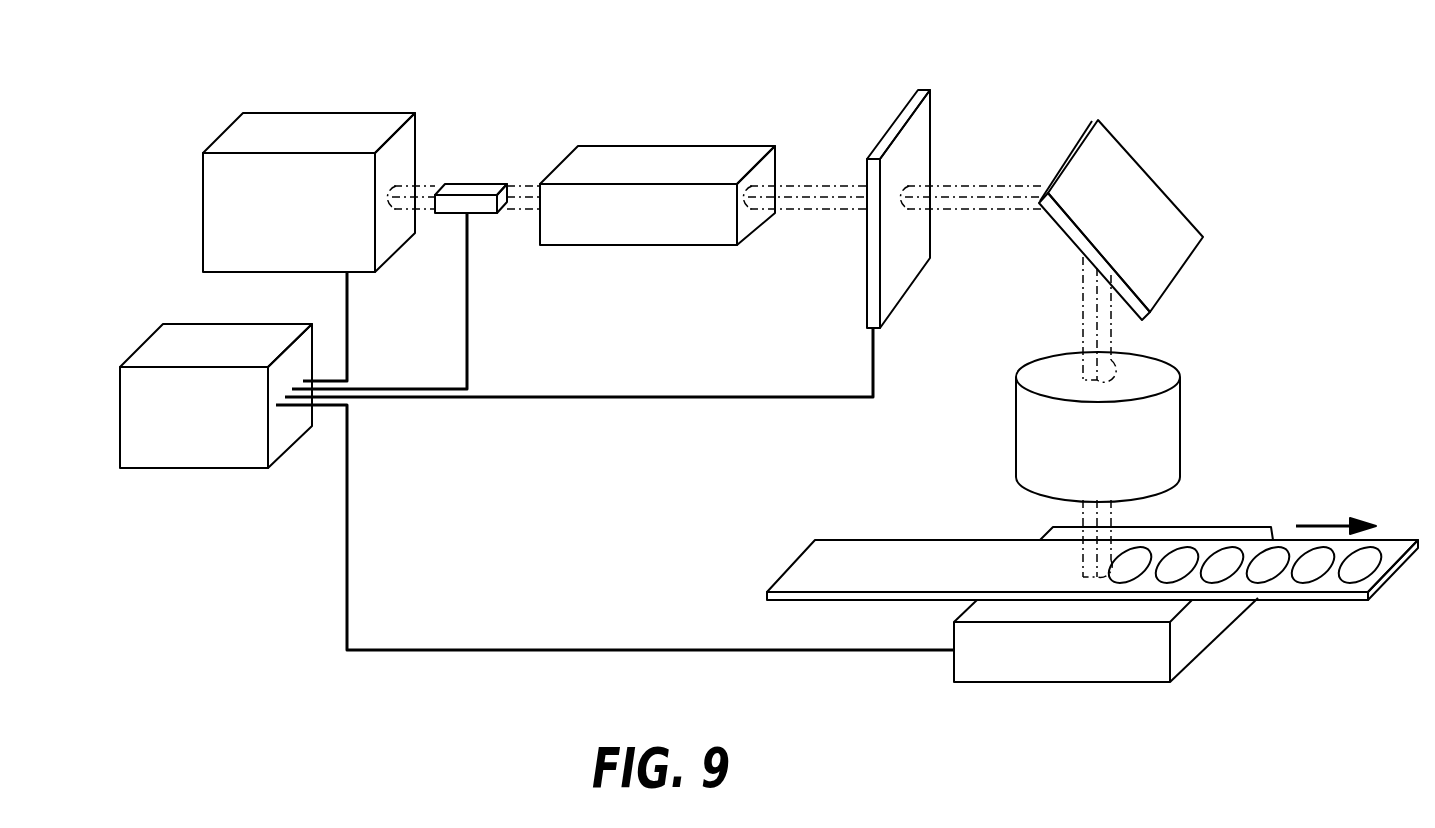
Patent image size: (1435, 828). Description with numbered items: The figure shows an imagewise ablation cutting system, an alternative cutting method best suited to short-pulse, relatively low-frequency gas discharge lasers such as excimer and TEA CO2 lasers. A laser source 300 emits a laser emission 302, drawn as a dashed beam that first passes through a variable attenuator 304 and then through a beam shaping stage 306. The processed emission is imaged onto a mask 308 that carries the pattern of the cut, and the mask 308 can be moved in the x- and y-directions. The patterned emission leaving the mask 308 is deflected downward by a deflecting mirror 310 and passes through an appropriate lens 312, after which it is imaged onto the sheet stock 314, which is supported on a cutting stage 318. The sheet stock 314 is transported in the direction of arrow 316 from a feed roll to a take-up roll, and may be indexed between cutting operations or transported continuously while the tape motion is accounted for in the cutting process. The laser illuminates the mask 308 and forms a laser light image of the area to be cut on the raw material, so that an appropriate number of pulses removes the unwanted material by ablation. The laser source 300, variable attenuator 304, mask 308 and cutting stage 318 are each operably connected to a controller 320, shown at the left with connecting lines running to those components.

The laser source 300 is at (303, 120).
The laser emission 302 is at (427, 193).
The variable attenuator 304 is at (478, 188).
The beam shaping stage 306 is at (675, 160).
The mask 308 is at (910, 107).
The deflecting mirror 310 is at (1152, 187).
The lens 312 is at (1172, 421).
The sheet stock 314 is at (1325, 600).
The arrow 316 is at (1323, 522).
The cutting stage 318 is at (1063, 685).
The controller 320 is at (204, 455).